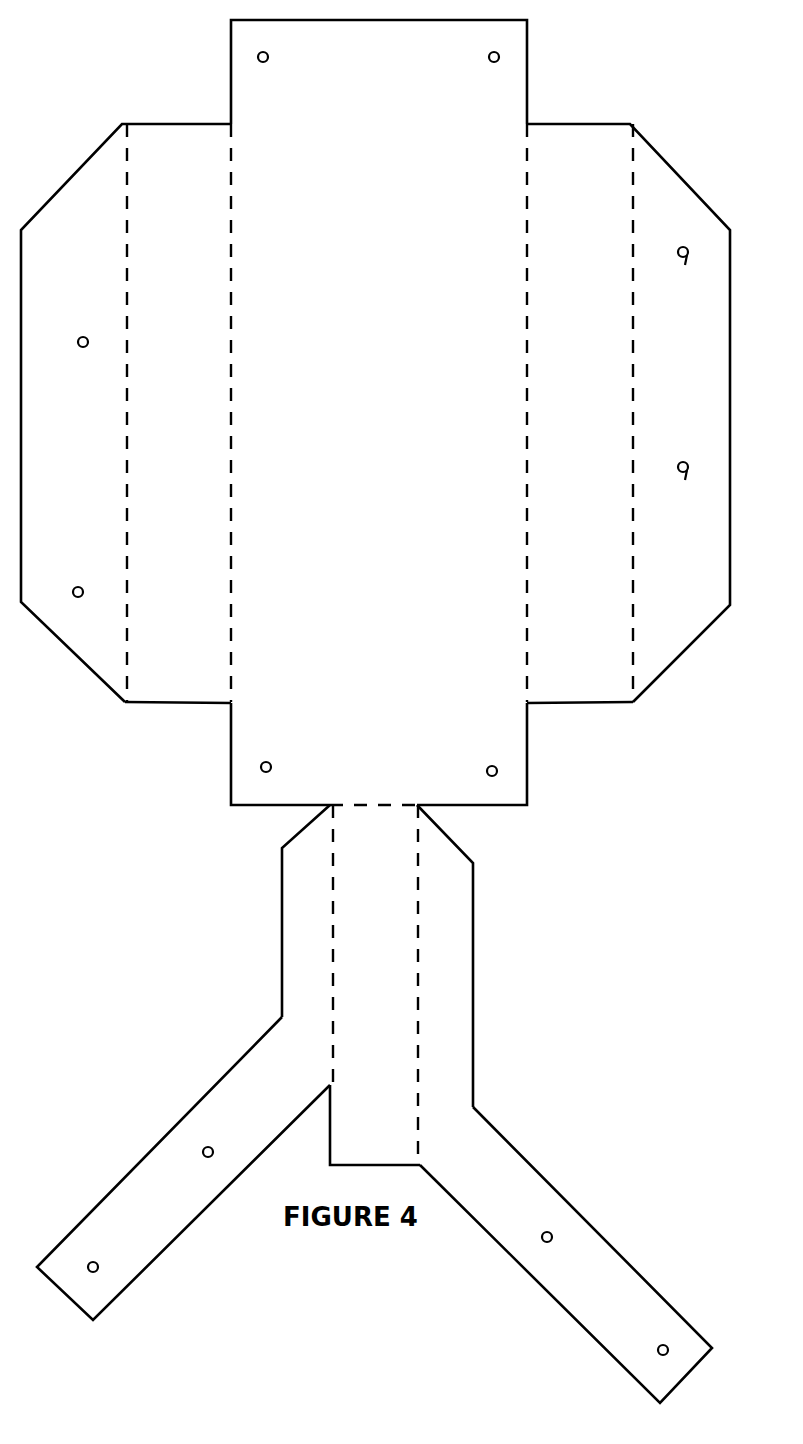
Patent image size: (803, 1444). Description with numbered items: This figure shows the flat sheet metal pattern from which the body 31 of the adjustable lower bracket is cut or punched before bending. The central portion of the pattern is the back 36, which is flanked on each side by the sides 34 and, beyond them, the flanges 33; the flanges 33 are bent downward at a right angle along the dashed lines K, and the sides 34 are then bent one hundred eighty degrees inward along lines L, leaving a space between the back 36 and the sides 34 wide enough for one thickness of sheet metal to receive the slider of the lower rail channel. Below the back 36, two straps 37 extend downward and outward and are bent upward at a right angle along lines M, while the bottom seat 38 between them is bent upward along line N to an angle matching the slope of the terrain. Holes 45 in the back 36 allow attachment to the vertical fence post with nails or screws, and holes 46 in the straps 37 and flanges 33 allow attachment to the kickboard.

The body 31 is at (153, 774).
The flanges 33 is at (52, 619).
The sides 34 is at (143, 693).
The back 36 is at (505, 138).
The straps 37 is at (172, 1131).
The bottom seat 38 is at (342, 1132).
The holes 45 is at (269, 57).
The holes 46 is at (79, 343).